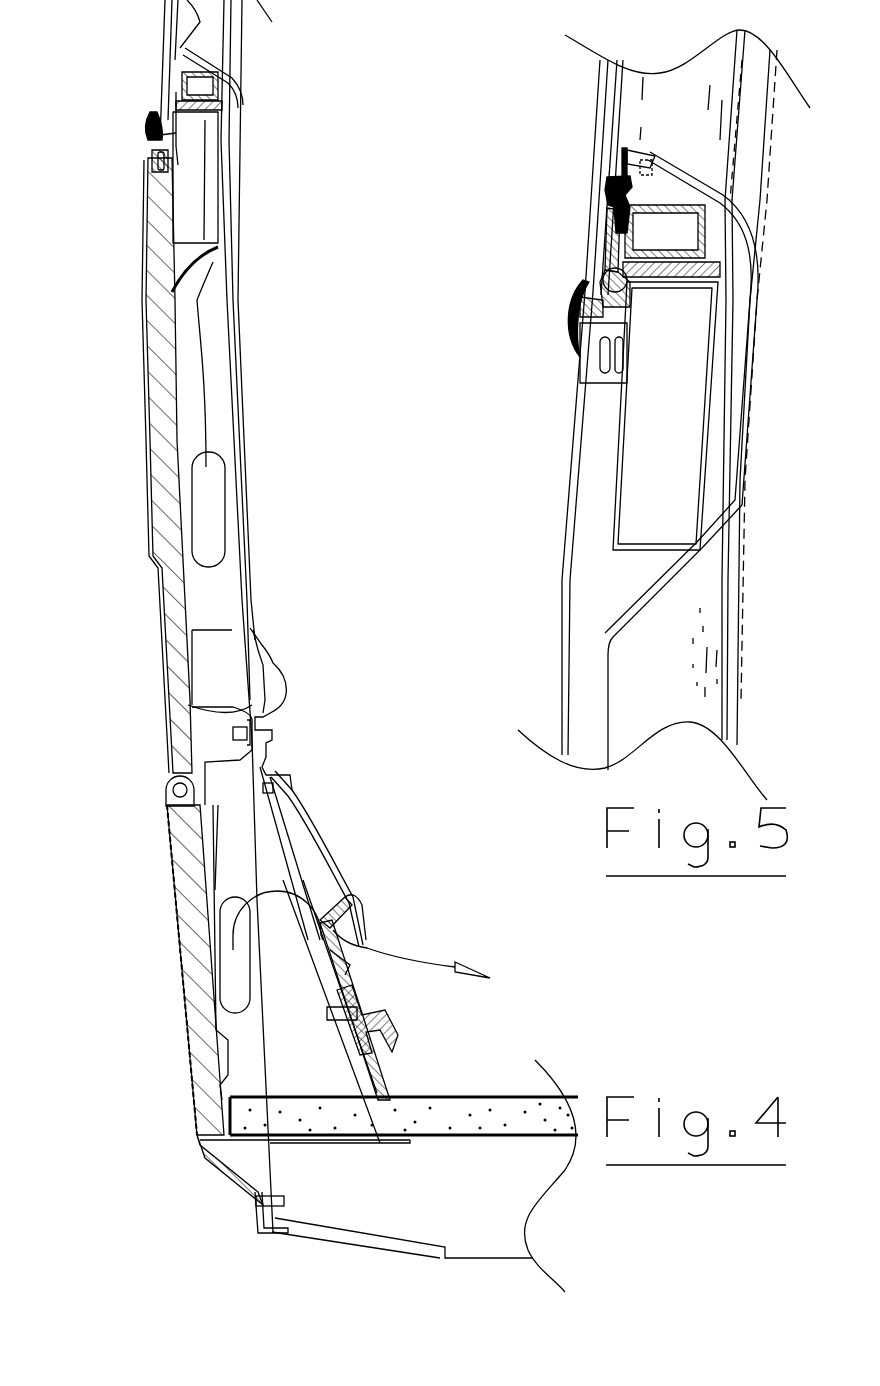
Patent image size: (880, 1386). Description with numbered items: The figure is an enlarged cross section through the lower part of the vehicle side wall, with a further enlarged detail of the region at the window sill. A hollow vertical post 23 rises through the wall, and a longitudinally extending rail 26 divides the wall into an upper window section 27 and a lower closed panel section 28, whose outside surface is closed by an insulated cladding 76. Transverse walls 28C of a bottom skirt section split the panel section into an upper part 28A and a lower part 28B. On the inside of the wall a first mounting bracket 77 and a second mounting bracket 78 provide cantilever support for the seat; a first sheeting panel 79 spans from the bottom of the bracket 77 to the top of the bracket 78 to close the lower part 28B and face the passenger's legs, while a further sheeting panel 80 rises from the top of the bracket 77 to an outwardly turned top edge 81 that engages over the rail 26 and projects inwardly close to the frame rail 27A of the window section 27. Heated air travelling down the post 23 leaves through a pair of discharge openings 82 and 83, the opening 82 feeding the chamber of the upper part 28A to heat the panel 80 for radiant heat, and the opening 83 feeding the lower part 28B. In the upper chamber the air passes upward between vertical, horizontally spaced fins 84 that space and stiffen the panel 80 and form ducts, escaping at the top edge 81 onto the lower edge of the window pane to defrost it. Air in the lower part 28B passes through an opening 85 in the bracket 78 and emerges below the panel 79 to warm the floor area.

In FIG. 4, the vertical post 23 is at (215, 393).
In FIG. 5, the longitudinally extending rail 26 is at (650, 350).
In FIG. 5, the upper window section 27 is at (578, 121).
In FIG. 5, the frame rail 27A is at (605, 200).
In FIG. 4, the lower closed panel section 28 is at (289, 763).
In FIG. 4, the upper part of the lower panel section 28A is at (234, 607).
In FIG. 4, the lower part of the lower panel section 28B is at (222, 807).
In FIG. 4, the transverse wall 28C is at (222, 755).
In FIG. 4, the insulated cladding 76 is at (166, 524).
In FIG. 4, the first mounting bracket 77 is at (270, 727).
In FIG. 4, the second mounting bracket 78 is at (372, 985).
In FIG. 4, the first sheeting panel 79 is at (343, 867).
In FIG. 4, the further sheeting panel 80 is at (250, 535).
In FIG. 5, the outwardly turned top edge 81 is at (705, 190).
In FIG. 4, the discharge opening 82 is at (192, 500).
In FIG. 4, the discharge opening 83 is at (220, 957).
In FIG. 5, the vertical fin 84 is at (735, 350).
In FIG. 4, the opening in the bracket 85 is at (355, 931).